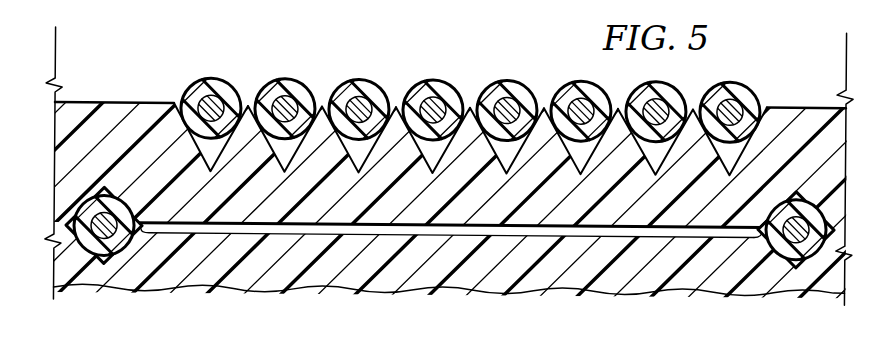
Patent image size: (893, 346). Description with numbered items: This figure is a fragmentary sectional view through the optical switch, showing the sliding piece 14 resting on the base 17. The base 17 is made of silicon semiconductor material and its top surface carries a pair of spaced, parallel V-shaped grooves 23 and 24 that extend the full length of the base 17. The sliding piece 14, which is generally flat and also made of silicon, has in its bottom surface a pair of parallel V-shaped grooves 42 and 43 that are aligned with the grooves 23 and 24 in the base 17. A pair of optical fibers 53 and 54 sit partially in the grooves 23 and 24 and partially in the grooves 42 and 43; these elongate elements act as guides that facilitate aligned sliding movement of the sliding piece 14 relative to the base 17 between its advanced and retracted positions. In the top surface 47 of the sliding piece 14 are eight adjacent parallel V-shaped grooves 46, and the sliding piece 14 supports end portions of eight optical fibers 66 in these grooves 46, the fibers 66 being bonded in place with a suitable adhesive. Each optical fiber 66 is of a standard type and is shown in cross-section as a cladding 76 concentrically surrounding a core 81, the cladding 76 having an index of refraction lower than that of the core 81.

The sliding piece 14 is at (790, 102).
The base 17 is at (267, 288).
The V-shaped groove 23 is at (92, 267).
The V-shaped groove 24 is at (790, 259).
The V-shaped groove 42 is at (143, 232).
The V-shaped groove 43 is at (763, 235).
The V-shaped grooves 46 is at (503, 160).
The top surface 47 is at (118, 102).
The optical fiber 53 is at (70, 215).
The optical fiber 54 is at (823, 256).
The optical fibers 66 is at (273, 78).
The cladding 76 is at (360, 79).
The core 81 is at (510, 93).